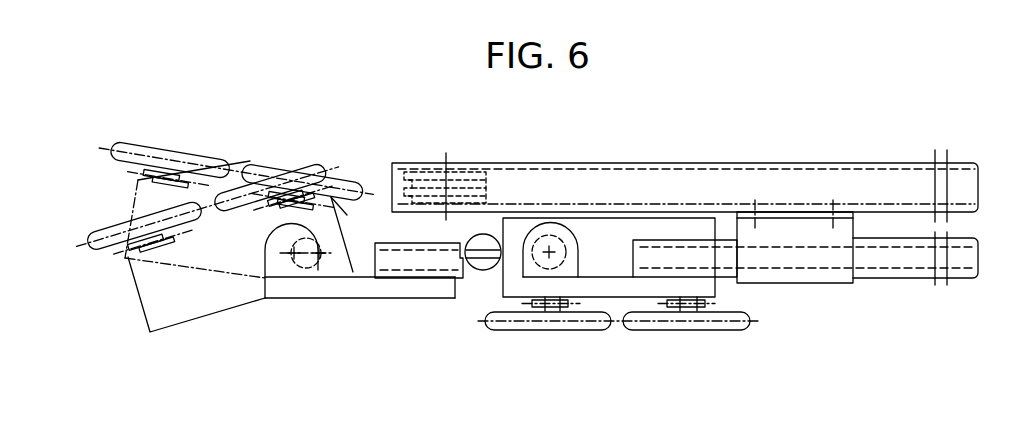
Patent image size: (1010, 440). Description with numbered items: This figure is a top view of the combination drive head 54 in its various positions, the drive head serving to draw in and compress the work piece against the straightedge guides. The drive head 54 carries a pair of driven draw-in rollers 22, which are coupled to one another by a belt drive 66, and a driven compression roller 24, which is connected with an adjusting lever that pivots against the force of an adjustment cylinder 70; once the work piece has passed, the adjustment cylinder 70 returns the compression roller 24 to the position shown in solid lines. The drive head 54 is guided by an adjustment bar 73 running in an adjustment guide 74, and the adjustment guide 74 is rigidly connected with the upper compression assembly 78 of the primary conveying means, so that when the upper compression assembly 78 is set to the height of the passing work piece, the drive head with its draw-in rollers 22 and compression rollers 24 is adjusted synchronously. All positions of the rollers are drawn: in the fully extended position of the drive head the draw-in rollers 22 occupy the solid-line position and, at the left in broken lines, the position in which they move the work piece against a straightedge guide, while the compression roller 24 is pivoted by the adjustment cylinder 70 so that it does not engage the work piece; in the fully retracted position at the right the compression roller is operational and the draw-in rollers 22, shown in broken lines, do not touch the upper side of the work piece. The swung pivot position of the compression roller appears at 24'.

The draw-in roller 22 is at (88, 244).
The compression roller 24 is at (753, 251).
The pivot bearing (swung position) 24' is at (306, 285).
The combination drive head 54 is at (259, 308).
The belt drive 66 is at (190, 178).
The adjustment cylinder 70 is at (484, 270).
The adjustment bar 73 is at (902, 275).
The adjustment guide 74 is at (820, 274).
The upper compression assembly 78 is at (632, 177).